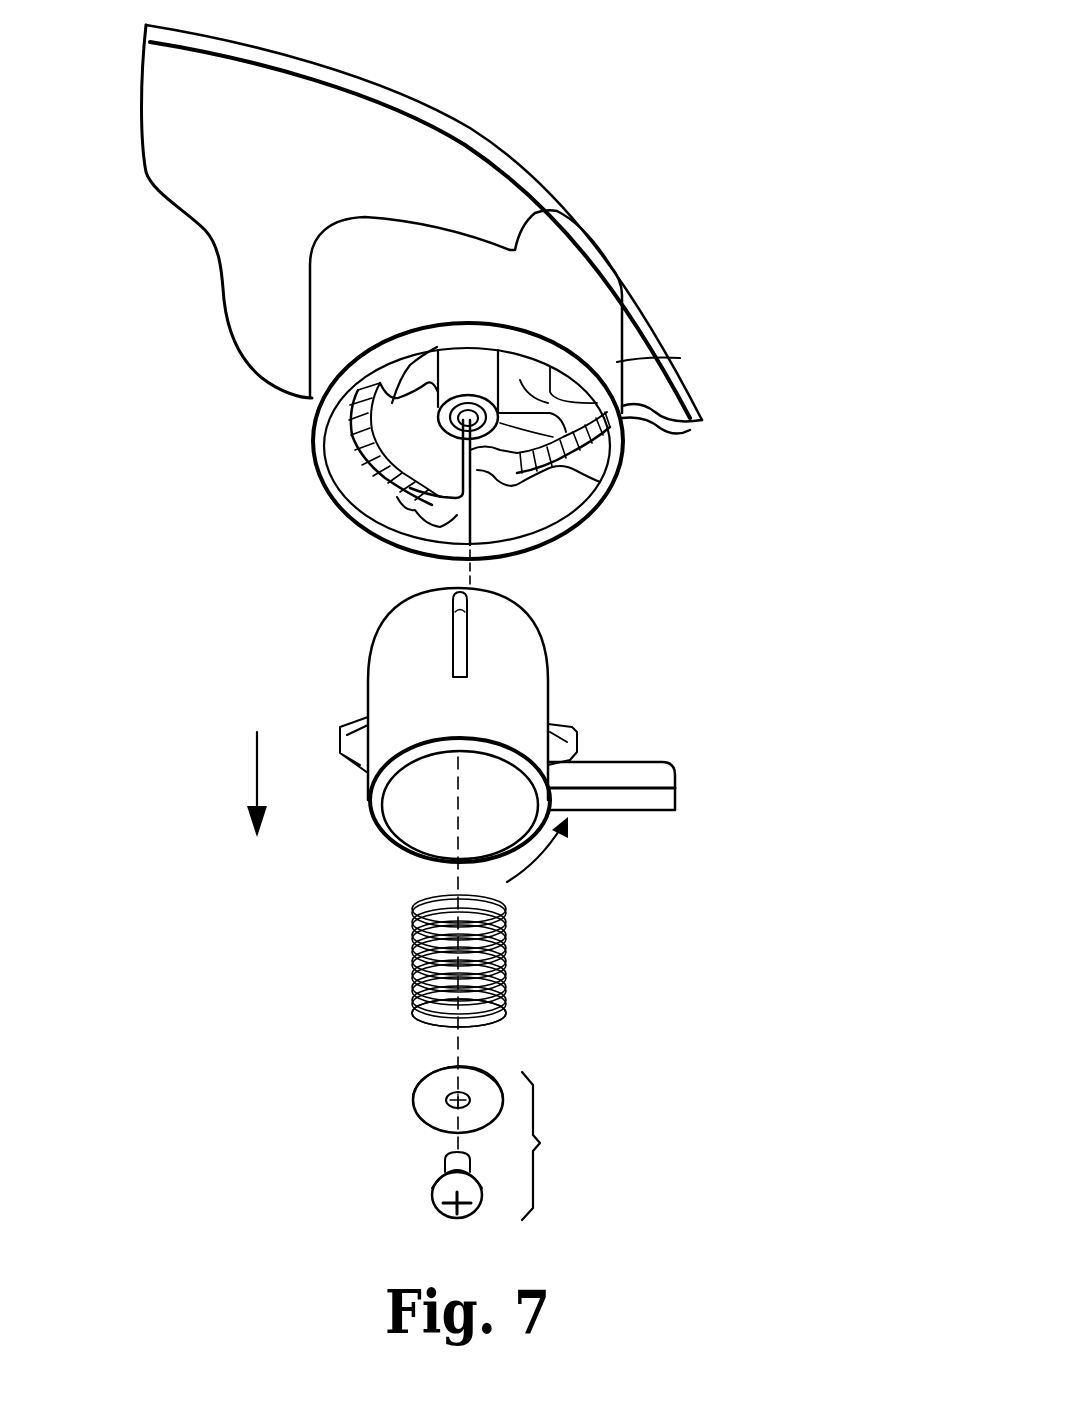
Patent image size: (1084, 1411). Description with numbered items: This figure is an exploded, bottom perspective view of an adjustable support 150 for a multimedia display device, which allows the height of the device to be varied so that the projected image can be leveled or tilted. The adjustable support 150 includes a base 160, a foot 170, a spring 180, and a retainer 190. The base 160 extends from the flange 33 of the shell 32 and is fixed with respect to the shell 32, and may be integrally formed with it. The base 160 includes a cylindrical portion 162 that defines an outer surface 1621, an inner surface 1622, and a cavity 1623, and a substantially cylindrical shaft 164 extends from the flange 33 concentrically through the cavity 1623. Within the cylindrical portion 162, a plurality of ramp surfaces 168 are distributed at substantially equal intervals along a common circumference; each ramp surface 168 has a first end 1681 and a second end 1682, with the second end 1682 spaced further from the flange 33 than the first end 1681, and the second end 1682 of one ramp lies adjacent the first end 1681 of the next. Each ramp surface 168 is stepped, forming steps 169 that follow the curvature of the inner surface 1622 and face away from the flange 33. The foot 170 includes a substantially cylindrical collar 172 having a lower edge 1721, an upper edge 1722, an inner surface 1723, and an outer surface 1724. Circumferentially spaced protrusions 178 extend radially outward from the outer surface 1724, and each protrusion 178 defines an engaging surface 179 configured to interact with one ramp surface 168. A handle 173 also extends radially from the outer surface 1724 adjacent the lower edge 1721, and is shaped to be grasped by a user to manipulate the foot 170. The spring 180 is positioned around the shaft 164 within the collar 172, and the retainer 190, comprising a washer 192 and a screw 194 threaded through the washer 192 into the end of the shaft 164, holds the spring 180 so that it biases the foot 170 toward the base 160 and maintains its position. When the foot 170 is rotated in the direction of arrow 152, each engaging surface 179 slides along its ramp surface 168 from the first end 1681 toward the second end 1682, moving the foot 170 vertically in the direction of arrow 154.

The shell 32 is at (292, 112).
The flange 33 is at (413, 148).
The adjustable support 150 is at (776, 232).
The arrow 152 is at (540, 860).
The arrow 154 is at (257, 770).
The base 160 is at (574, 283).
The cylindrical portion 162 is at (602, 327).
The outer surface 1621 is at (680, 358).
The inner surface 1622 is at (598, 472).
The cavity 1623 is at (630, 407).
The shaft 164 is at (460, 385).
The ramp surfaces 168 is at (356, 475).
The first end 1681 is at (360, 395).
The second end 1682 is at (618, 436).
The steps 169 is at (578, 488).
The foot 170 is at (600, 688).
The collar 172 is at (398, 668).
The lower edge 1721 is at (372, 768).
The upper edge 1722 is at (398, 616).
The inner surface 1723 is at (417, 818).
The outer surface 1724 is at (527, 665).
The handle 173 is at (640, 775).
The protrusions 178 is at (467, 638).
The engaging surface 179 is at (565, 727).
The spring 180 is at (505, 963).
The retainer 190 is at (562, 1146).
The washer 192 is at (433, 1096).
The screw 194 is at (440, 1190).